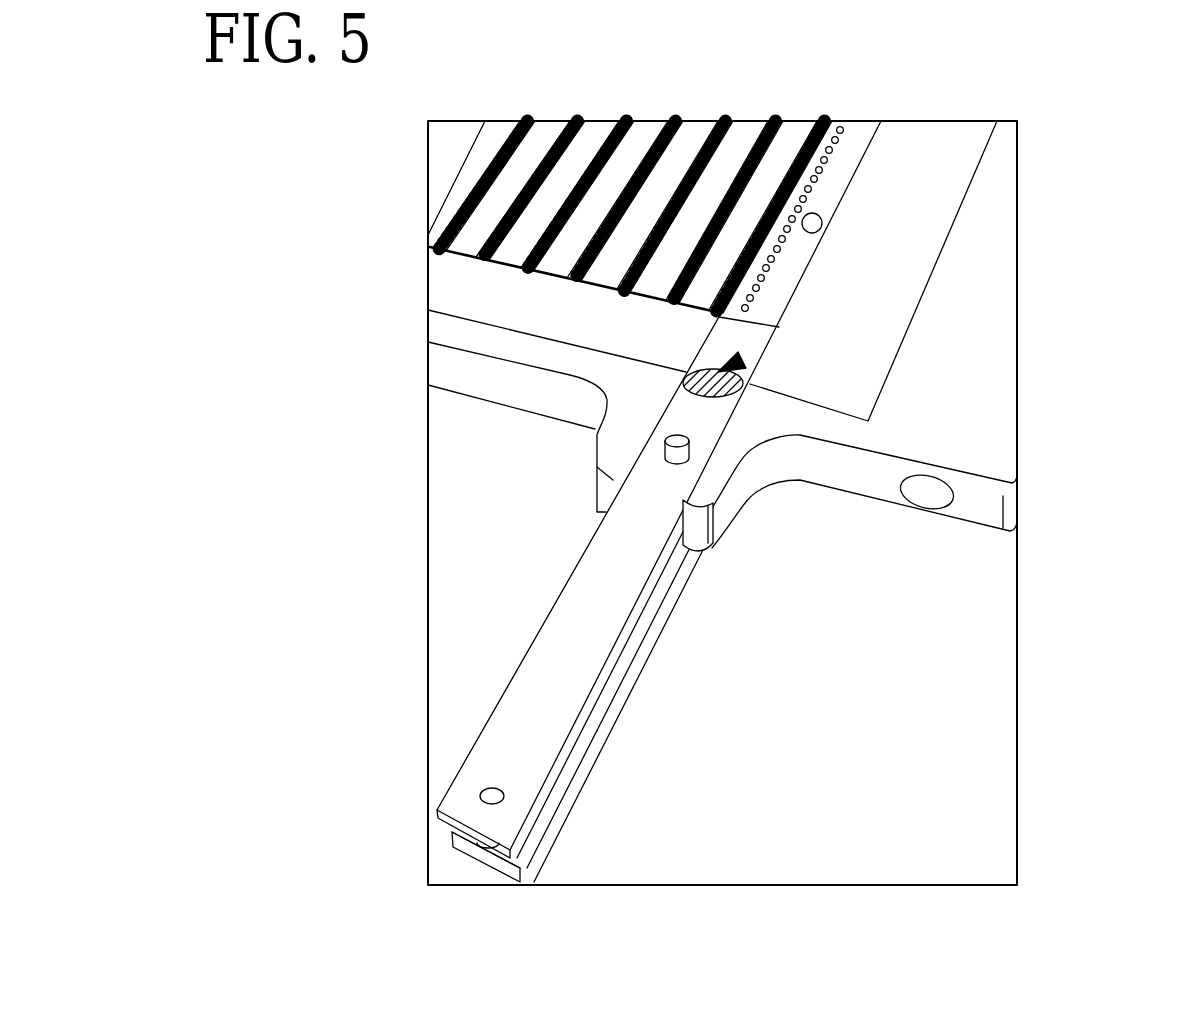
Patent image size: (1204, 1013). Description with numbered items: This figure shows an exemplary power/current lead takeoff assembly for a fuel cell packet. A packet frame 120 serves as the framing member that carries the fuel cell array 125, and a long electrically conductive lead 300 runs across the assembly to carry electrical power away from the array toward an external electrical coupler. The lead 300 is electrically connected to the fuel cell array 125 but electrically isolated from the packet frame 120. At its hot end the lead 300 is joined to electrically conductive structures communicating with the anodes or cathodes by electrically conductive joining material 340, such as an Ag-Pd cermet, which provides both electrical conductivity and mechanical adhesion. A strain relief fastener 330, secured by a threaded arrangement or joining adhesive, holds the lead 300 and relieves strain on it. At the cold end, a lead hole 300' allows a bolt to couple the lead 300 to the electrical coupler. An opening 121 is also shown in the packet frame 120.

The packet frame 120 is at (990, 270).
The hole in housing 121 is at (930, 503).
The fuel cell array 125 is at (1003, 108).
The electrically conductive lead 300 is at (659, 501).
The lead hole 300' is at (394, 761).
The strain relief fastener 330 is at (673, 437).
The electrically conductive joining material 340 is at (745, 360).